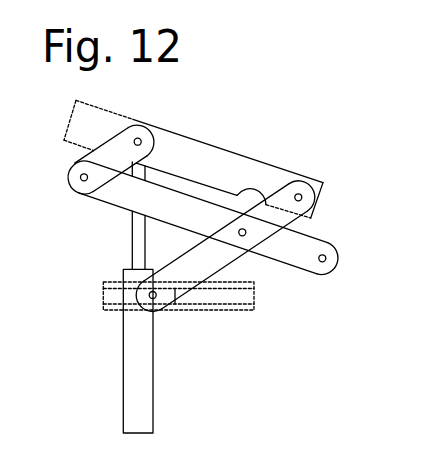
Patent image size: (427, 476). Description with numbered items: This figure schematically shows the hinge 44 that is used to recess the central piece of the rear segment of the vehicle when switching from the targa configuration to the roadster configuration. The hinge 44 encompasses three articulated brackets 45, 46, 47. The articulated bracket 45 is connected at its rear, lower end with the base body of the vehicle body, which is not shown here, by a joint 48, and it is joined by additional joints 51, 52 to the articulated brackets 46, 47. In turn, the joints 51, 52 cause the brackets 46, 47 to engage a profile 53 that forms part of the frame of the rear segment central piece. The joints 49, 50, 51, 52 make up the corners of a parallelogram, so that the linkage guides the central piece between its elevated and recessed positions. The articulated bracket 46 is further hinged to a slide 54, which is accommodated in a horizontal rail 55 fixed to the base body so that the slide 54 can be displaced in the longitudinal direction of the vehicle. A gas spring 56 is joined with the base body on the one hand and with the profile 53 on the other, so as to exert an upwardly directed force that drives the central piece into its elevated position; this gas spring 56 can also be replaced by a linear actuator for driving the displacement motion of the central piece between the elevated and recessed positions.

The hinge 44 is at (252, 92).
The articulated bracket 45 is at (126, 204).
The articulated bracket 46 is at (203, 260).
The articulated bracket 47 is at (110, 157).
The joint 48 is at (326, 260).
The joint 49 is at (243, 236).
The joint 50 is at (80, 177).
The joint 51 is at (138, 138).
The joint 52 is at (299, 194).
The profile 53 is at (199, 157).
The slide 54 is at (132, 291).
The horizontal rail 55 is at (240, 298).
The gas spring 56 is at (132, 336).